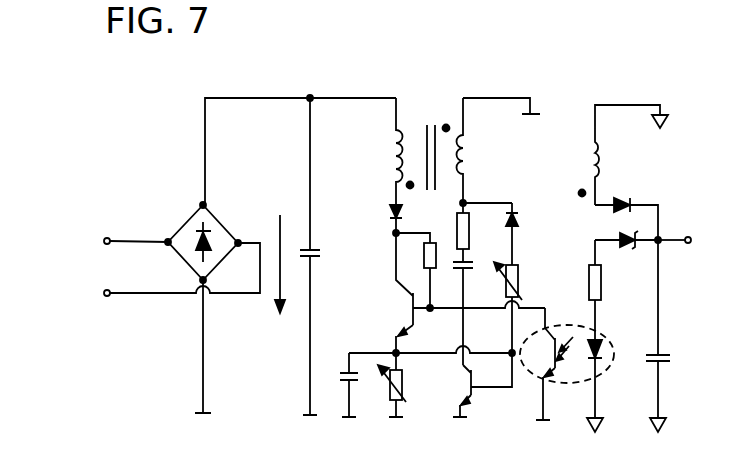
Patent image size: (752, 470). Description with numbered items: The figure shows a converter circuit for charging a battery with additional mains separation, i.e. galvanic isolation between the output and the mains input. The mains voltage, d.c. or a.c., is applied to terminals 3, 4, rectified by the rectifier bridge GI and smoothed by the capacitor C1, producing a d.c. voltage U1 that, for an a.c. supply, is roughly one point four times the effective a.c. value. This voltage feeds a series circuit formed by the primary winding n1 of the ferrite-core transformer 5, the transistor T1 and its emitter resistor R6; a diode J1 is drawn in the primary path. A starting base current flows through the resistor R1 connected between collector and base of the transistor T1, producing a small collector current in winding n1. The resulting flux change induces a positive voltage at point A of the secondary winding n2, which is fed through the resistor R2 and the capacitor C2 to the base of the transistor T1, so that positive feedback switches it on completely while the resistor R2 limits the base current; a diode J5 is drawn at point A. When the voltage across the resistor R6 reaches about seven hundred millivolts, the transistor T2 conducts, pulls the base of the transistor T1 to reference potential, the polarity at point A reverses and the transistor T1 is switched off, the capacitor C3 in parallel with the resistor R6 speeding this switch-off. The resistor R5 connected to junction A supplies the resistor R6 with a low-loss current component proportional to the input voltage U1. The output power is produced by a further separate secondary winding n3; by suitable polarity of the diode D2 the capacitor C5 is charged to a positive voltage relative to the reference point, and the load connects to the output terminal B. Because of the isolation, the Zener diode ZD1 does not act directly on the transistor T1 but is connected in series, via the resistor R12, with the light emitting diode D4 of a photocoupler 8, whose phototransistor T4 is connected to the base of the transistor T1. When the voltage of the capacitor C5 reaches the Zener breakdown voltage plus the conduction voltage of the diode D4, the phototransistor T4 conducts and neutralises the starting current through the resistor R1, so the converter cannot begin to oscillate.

The rectifier bridge GI is at (183, 228).
The terminal 3 is at (127, 242).
The terminal 4 is at (173, 273).
The d.c. voltage U1 is at (274, 250).
The capacitor C1 is at (314, 252).
The primary winding n1 is at (392, 152).
The transformer 5 is at (428, 132).
The secondary winding n2 is at (472, 150).
The diode J1 is at (390, 214).
The resistor R1 is at (424, 257).
The transistor T1 is at (411, 309).
The point A is at (466, 201).
The resistor R2 is at (469, 231).
The capacitor C2 is at (473, 268).
The diode J5 is at (519, 222).
The resistor R5 is at (519, 283).
The capacitor C3 is at (343, 365).
The resistor R6 is at (403, 386).
The transistor T2 is at (482, 386).
The photocoupler 8 is at (609, 380).
The phototransistor T4 is at (556, 364).
The light emitting diode D4 is at (605, 347).
The resistor R12 is at (601, 291).
The secondary winding n3 is at (601, 150).
The diode D2 is at (626, 205).
The Zener diode ZD1 is at (626, 251).
The output terminal B is at (681, 253).
The capacitor C5 is at (665, 352).